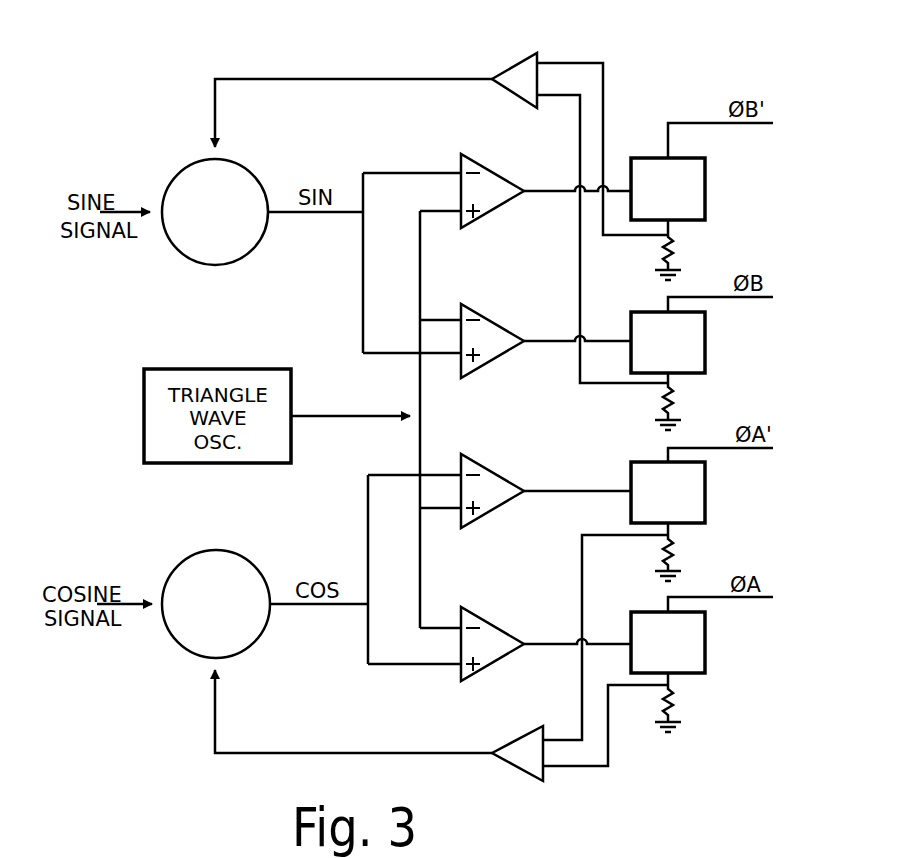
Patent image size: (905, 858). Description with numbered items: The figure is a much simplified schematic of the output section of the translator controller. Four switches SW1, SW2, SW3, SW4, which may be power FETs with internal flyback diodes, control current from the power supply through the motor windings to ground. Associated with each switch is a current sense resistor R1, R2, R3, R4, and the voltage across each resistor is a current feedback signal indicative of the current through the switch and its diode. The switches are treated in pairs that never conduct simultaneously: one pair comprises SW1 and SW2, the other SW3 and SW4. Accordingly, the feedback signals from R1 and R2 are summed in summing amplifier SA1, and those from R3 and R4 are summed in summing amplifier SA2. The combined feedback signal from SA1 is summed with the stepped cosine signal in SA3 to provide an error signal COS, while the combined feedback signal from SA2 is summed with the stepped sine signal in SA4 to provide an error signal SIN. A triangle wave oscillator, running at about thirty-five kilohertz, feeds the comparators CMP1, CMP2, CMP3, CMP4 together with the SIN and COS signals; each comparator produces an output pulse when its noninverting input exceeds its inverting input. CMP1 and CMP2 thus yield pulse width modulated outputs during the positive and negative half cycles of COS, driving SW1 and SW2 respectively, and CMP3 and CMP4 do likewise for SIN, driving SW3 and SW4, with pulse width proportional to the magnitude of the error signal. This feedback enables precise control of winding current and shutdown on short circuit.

The summing amplifier SA1 is at (495, 754).
The summing amplifier SA2 is at (512, 72).
The summing amplifier SA3 is at (250, 571).
The summing amplifier SA4 is at (246, 178).
The comparator CMP1 is at (478, 616).
The comparator CMP2 is at (478, 462).
The comparator CMP3 is at (478, 309).
The comparator CMP4 is at (478, 161).
The switch SW1 is at (668, 642).
The switch SW2 is at (668, 492).
The switch SW3 is at (668, 342).
The switch SW4 is at (668, 189).
The current sense resistor R1 is at (676, 704).
The current sense resistor R2 is at (676, 550).
The current sense resistor R3 is at (676, 400).
The current sense resistor R4 is at (676, 250).